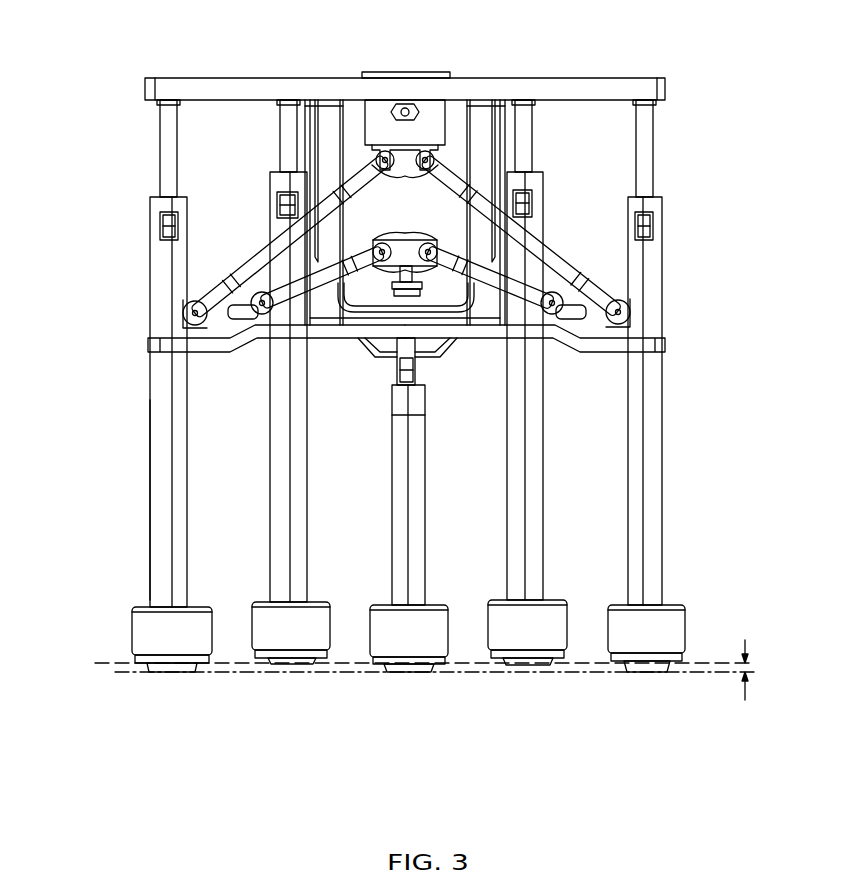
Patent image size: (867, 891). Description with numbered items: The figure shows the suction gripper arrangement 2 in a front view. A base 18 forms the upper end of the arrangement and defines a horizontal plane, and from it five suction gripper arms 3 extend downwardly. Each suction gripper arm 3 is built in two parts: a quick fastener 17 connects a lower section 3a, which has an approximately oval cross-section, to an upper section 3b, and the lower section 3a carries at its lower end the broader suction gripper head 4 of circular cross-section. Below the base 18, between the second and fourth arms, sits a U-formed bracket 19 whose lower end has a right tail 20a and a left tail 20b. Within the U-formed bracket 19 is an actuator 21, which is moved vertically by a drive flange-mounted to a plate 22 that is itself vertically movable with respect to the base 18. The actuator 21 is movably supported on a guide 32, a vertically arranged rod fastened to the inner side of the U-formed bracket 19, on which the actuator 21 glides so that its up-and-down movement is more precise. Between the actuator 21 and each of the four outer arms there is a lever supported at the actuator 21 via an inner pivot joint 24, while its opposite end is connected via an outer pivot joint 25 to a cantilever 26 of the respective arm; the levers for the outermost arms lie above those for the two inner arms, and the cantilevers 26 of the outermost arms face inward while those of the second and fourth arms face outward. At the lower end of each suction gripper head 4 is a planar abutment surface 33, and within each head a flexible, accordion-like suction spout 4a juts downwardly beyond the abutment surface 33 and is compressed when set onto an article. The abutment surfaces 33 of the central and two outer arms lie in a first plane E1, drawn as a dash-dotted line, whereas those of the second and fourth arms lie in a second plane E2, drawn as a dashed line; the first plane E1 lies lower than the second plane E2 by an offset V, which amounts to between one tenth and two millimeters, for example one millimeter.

The suction gripper arrangement 2 is at (78, 88).
The base 18 is at (233, 88).
The plate 22 is at (406, 70).
The U-formed bracket 19 is at (486, 110).
The actuator 21 is at (416, 209).
The guide 32 is at (413, 280).
The inner pivot joint 24 is at (383, 150).
The cantilever 26 is at (196, 300).
The outer pivot joint 25 is at (183, 313).
The left tail 20b is at (216, 346).
The right tail 20a is at (578, 346).
The suction gripper arm 3 is at (403, 353).
The upper section 3b is at (158, 150).
The lower section 3a is at (152, 416).
The quick fastener 17 is at (535, 195).
The suction gripper head 4 is at (435, 660).
The abutment surface 33 is at (527, 670).
The suction spout 4a is at (413, 674).
The second plane E2 is at (100, 662).
The first plane E1 is at (120, 674).
The offset V is at (760, 670).